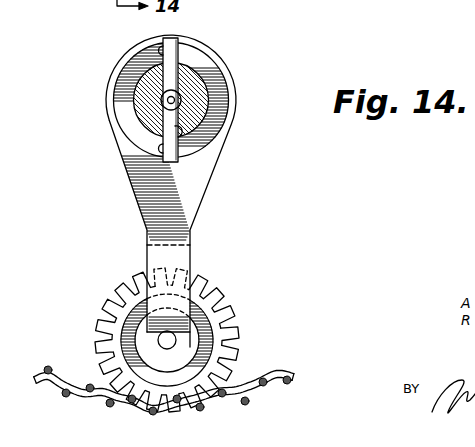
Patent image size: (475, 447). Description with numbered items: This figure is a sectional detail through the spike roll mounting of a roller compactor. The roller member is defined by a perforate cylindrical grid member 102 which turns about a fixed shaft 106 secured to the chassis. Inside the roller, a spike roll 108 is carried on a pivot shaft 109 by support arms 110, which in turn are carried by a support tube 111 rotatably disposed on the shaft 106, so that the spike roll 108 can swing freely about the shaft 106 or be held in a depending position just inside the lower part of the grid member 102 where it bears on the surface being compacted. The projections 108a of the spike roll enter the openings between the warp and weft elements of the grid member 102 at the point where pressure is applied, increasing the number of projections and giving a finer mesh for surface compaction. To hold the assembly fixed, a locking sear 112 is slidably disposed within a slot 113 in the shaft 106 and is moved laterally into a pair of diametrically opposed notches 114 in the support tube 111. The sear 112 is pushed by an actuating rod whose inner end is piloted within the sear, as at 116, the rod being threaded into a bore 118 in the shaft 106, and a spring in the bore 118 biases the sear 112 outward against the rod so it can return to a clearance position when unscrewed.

The perforate cylindrical grid member 102 is at (277, 396).
The fixed shaft 106 is at (196, 80).
The spike roll 108 is at (203, 310).
The projections 108a is at (233, 360).
The pivot shaft 109 is at (158, 340).
The support arms 110 is at (197, 192).
The support tube 111 is at (217, 88).
The locking sear 112 is at (171, 39).
The slot 113 is at (178, 133).
The notches 114 is at (161, 50).
The piloted inner end 116 is at (178, 101).
The bore 118 is at (171, 100).